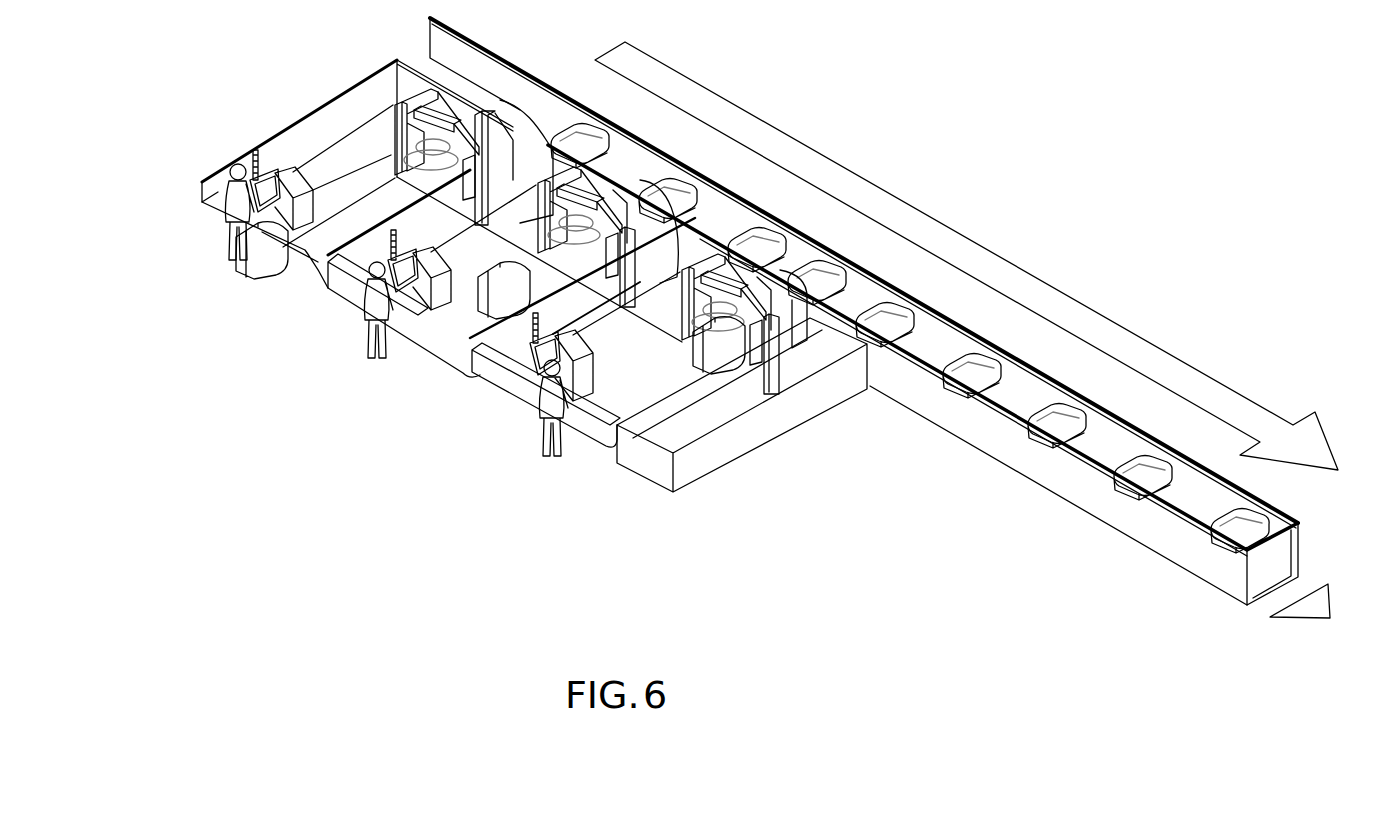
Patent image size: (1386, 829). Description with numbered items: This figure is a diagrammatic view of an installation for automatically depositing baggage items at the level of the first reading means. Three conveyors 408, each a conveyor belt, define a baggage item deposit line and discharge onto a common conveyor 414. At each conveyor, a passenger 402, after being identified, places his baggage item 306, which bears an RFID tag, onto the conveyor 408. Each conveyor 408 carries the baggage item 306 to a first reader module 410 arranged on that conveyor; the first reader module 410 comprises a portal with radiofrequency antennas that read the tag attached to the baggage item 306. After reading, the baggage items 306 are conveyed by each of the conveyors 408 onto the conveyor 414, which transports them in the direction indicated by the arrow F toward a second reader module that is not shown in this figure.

The baggage item 306 is at (255, 256).
The passenger 402 is at (216, 213).
The conveyor belt 408 is at (308, 256).
The first reader module 410 is at (388, 134).
The conveyor 414 is at (960, 303).
The arrow F is at (783, 150).